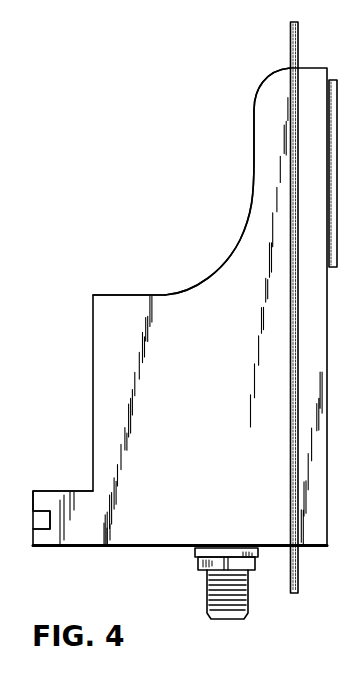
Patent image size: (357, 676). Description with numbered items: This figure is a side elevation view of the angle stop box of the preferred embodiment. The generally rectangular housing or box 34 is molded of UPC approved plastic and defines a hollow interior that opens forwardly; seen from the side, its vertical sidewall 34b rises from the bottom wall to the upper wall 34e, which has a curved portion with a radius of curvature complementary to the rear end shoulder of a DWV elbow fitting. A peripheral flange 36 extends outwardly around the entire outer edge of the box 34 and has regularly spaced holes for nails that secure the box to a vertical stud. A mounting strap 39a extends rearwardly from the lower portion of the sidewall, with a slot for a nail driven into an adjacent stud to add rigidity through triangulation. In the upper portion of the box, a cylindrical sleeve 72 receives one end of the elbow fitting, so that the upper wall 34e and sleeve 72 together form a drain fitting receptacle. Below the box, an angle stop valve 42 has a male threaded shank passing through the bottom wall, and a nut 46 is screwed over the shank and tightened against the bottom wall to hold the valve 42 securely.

The housing or box 34 is at (93, 380).
The upper wall 34e is at (197, 281).
The vertical sidewall 34b is at (228, 404).
The mounting strap 39a is at (50, 491).
The peripheral flange 36 is at (290, 466).
The cylindrical sleeve 72 is at (337, 97).
The nut 46 is at (195, 553).
The angle stop valve 42 is at (225, 619).